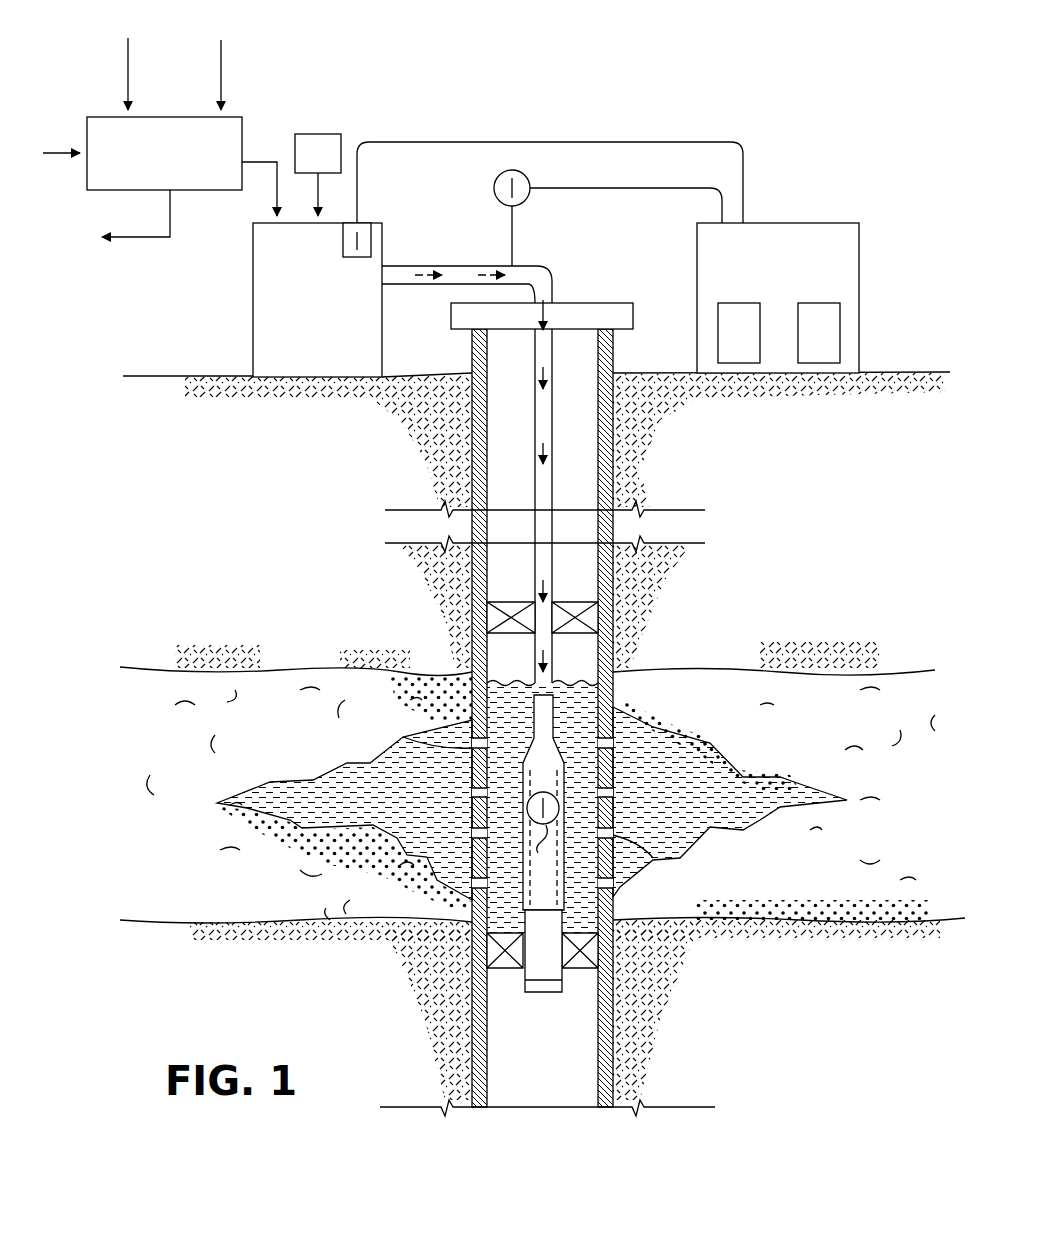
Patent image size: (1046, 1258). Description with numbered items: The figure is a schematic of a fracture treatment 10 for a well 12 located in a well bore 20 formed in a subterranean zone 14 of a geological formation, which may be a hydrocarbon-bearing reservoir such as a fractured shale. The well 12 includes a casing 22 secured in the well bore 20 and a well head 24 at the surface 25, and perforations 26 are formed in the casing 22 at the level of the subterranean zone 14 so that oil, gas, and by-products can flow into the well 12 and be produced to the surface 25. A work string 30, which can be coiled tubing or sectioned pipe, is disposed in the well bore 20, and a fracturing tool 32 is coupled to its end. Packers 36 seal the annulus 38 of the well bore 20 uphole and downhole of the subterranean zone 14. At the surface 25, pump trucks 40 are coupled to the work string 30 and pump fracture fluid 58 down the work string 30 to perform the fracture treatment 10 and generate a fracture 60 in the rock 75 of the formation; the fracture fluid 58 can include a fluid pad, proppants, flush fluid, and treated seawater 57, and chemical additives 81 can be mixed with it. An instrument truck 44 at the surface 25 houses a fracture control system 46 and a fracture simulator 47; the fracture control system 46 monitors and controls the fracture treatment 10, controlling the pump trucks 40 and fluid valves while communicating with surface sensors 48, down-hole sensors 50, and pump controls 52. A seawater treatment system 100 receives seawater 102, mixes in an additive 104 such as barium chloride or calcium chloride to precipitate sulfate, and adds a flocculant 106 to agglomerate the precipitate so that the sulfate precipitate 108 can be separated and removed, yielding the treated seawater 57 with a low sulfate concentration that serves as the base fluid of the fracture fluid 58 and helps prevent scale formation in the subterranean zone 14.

The fracture treatment 10 is at (772, 136).
The well 12 is at (583, 255).
The subterranean zone 14 is at (542, 791).
The well bore 20 is at (598, 414).
The casing 22 is at (487, 455).
The well head 24 is at (620, 303).
The surface 25 is at (666, 372).
The perforations 26 is at (403, 737).
The work string 30 is at (552, 572).
The fracturing tool 32 is at (535, 1008).
The packers 36 is at (573, 633).
The annulus 38 is at (542, 691).
The pump trucks 40 is at (252, 321).
The instrument truck 44 is at (826, 223).
The fracture control system 46 is at (739, 333).
The fracture simulator 47 is at (819, 333).
The surface sensors 48 is at (493, 193).
The down-hole sensors 50 is at (543, 838).
The pump controls 52 is at (350, 257).
The treated seawater 57 is at (265, 158).
The fracture fluid 58 is at (428, 265).
The fracture 60 is at (318, 778).
The rock 75 is at (559, 797).
The chemical additives 81 is at (318, 175).
The seawater treatment system 100 is at (86, 125).
The seawater 102 is at (56, 157).
The additive 104 is at (130, 62).
The flocculant 106 is at (223, 63).
The sulfate precipitate 108 is at (130, 240).